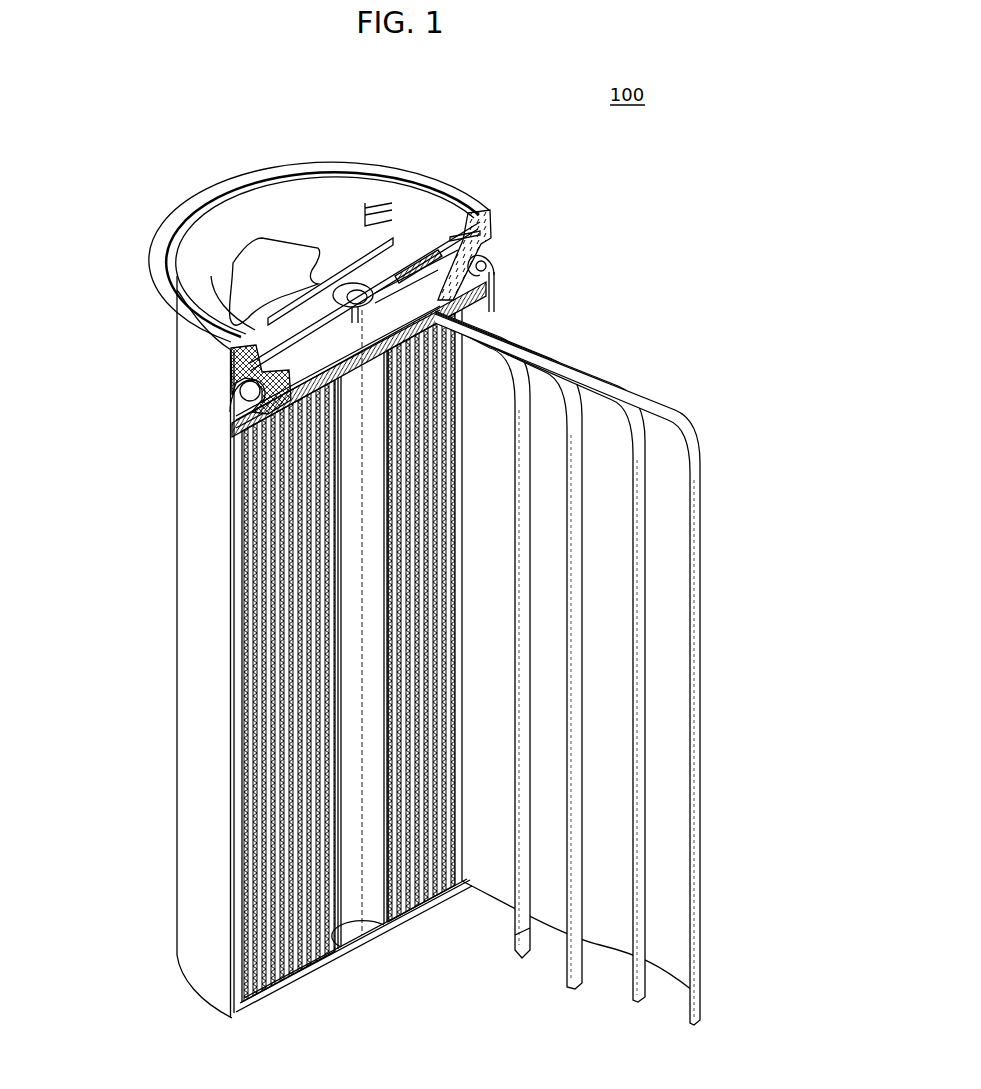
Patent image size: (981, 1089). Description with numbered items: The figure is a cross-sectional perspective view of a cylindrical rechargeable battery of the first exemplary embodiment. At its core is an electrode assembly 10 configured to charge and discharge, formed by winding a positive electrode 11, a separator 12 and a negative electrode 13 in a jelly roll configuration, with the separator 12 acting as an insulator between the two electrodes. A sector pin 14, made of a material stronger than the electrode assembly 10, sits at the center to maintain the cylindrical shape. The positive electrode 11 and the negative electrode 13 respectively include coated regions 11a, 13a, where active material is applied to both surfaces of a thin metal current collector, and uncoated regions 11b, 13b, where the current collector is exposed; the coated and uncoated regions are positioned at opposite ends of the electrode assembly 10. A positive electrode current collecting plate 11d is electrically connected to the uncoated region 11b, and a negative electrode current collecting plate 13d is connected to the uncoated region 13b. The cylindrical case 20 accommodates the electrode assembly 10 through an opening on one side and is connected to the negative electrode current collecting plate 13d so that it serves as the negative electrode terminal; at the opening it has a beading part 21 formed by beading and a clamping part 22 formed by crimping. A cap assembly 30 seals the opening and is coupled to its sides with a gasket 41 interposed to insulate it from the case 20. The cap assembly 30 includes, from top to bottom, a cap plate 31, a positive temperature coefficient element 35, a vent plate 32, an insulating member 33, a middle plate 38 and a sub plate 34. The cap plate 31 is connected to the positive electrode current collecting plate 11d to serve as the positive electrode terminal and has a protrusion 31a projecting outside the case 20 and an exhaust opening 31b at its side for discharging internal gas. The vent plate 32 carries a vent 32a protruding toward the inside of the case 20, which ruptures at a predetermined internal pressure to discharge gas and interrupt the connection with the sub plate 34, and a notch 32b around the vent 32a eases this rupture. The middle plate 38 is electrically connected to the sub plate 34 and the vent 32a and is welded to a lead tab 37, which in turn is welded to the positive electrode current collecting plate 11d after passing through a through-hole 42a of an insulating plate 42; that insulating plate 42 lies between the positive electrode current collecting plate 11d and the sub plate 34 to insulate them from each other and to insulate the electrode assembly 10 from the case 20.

The electrode assembly 10 is at (262, 797).
The positive electrode 11 is at (585, 669).
The coated region 11a is at (645, 478).
The uncoated region 11b is at (643, 455).
The positive electrode current collecting plate 11d is at (230, 433).
The separator 12 is at (576, 967).
The negative electrode 13 is at (487, 683).
The coated region 13a is at (513, 921).
The uncoated region 13b is at (524, 952).
The negative electrode current collecting plate 13d is at (283, 973).
The sector pin 14 is at (350, 892).
The case 20 is at (193, 553).
The beading part 21 is at (238, 388).
The clamping part 22 is at (203, 345).
The cap assembly 30 is at (218, 287).
The cap plate 31 is at (463, 220).
The protrusion 31a is at (298, 232).
The exhaust opening 31b is at (253, 257).
The vent plate 32 is at (425, 243).
The vent 32a is at (355, 300).
The notch 32b is at (372, 298).
The insulating member 33 is at (405, 292).
The sub plate 34 is at (487, 280).
The positive temperature coefficient (PTC) element 35 is at (487, 255).
The lead tab 37 is at (457, 358).
The middle plate 38 is at (472, 260).
The gasket 41 is at (245, 392).
The insulating plate 42 is at (227, 413).
The through-hole 42a is at (430, 390).